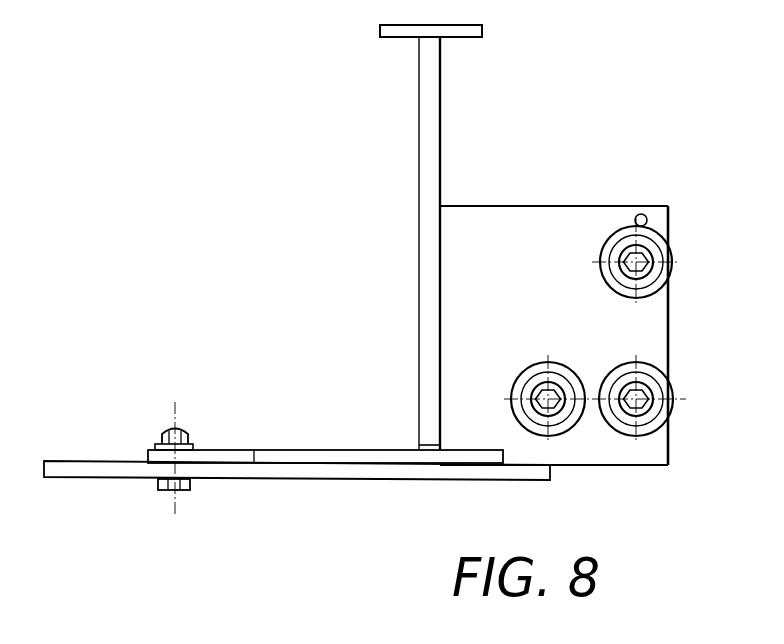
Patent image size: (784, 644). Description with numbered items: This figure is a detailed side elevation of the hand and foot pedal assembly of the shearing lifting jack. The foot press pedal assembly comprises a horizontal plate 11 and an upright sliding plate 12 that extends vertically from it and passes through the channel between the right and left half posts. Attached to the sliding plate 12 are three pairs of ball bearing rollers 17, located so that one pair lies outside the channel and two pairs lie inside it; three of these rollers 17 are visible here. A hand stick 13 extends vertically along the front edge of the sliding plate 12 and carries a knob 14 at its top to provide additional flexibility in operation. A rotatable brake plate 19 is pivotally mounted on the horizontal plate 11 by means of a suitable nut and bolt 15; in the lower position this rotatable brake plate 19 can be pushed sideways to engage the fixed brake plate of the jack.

The horizontal plate 11 is at (92, 469).
The upright sliding plate 12 is at (546, 228).
The hand stick 13 is at (429, 108).
The knob 14 is at (482, 38).
The nut and bolt 15 is at (191, 436).
The ball bearing rollers 17 is at (526, 372).
The rotatable brake plate 19 is at (302, 451).